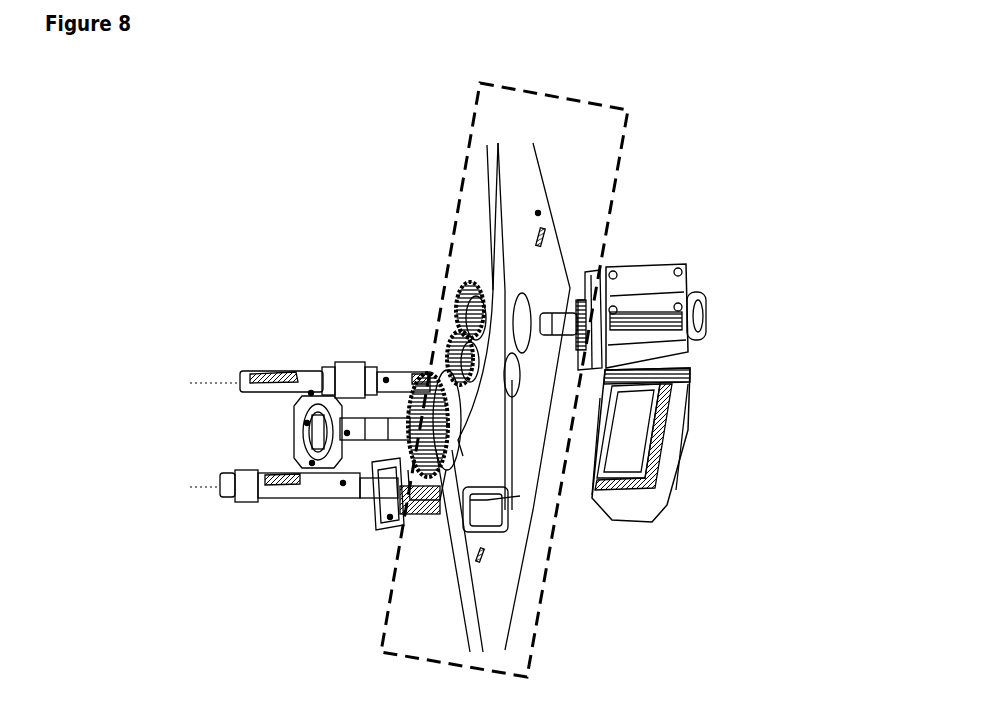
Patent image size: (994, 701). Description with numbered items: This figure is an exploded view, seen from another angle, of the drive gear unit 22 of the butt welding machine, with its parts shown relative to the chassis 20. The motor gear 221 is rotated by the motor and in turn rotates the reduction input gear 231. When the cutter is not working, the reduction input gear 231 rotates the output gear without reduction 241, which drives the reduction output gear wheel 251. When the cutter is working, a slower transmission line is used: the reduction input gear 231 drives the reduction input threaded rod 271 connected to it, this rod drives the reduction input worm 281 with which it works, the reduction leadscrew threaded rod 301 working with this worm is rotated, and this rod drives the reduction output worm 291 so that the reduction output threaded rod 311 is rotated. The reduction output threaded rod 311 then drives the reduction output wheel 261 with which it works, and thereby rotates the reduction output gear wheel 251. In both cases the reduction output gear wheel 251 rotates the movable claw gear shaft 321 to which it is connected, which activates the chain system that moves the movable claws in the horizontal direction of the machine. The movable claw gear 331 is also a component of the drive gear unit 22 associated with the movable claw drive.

The drive gear unit 22 is at (628, 157).
The chassis 20 is at (538, 213).
The motor gear 221 is at (580, 290).
The reduction input gear 231 is at (535, 350).
The output gear without reduction 241 is at (475, 415).
The reduction output gear wheel 251 is at (520, 486).
The reduction output wheel 261 is at (427, 380).
The reduction input threaded rod 271 is at (386, 380).
The reduction input worm 281 is at (311, 393).
The reduction output worm 291 is at (307, 423).
The reduction leadscrew threaded rod 301 is at (312, 463).
The reduction output threaded rod 311 is at (347, 433).
The movable claw gear shaft 321 is at (343, 483).
The movable claw gear 331 is at (390, 517).